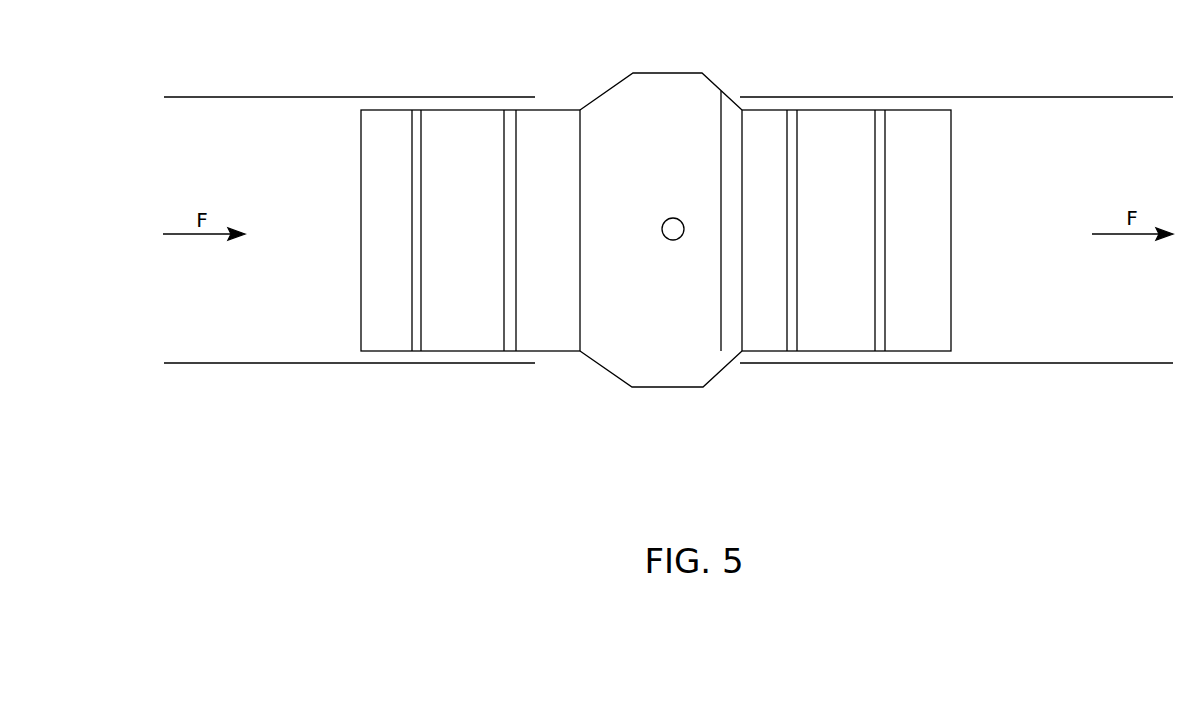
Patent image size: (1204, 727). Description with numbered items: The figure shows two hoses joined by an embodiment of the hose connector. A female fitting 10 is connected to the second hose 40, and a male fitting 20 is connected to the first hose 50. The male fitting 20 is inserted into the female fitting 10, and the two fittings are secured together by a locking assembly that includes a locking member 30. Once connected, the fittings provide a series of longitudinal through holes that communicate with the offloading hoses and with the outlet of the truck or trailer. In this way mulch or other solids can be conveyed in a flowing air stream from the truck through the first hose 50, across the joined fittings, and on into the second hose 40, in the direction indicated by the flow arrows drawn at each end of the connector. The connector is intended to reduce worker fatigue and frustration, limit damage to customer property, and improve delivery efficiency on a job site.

The female fitting 10 is at (567, 132).
The male fitting 20 is at (757, 132).
The locking member 30 is at (673, 240).
The second hose 40 is at (265, 137).
The first hose 50 is at (1128, 138).